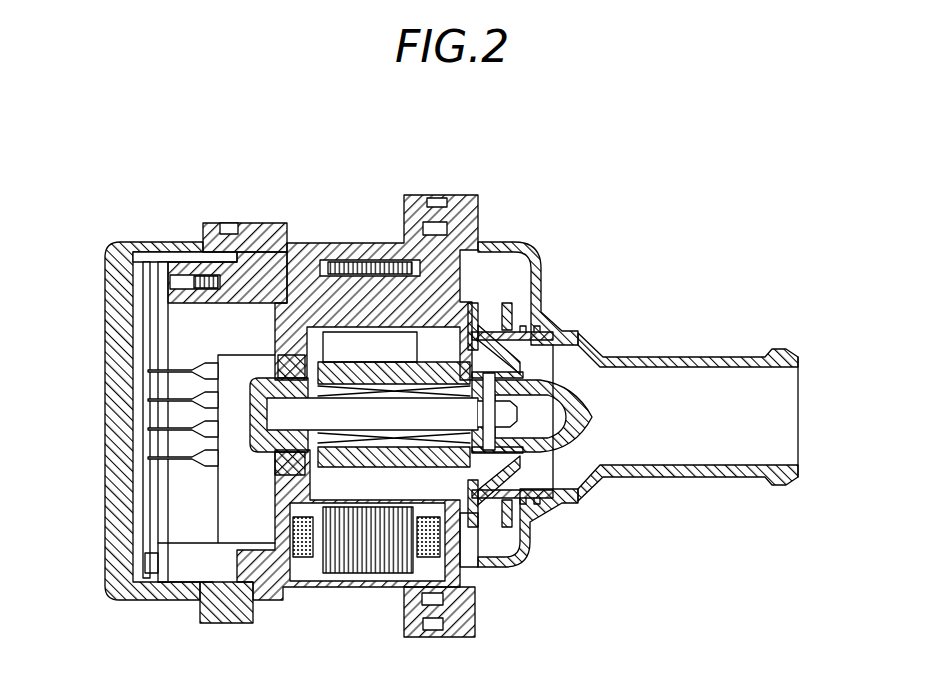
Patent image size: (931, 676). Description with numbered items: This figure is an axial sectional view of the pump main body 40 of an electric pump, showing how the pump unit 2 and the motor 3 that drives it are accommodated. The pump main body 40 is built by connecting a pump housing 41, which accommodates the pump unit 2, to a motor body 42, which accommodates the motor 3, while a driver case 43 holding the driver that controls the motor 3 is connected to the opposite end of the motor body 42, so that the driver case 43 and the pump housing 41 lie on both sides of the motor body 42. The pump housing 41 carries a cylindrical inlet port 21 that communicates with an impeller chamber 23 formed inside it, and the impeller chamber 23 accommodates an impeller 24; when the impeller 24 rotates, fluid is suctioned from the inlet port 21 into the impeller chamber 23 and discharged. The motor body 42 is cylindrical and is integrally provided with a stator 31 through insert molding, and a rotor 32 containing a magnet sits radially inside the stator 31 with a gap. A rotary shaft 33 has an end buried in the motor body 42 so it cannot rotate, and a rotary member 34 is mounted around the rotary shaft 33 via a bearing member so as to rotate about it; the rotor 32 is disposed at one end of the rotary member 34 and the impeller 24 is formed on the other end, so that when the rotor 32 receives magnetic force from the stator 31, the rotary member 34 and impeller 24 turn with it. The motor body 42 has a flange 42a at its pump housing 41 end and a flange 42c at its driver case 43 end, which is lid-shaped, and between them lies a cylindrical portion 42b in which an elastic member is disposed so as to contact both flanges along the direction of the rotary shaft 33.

The pump unit 2 is at (629, 426).
The motor 3 is at (355, 393).
The inlet port 21 is at (705, 357).
The impeller chamber 23 is at (495, 542).
The impeller 24 is at (500, 345).
The stator 31 is at (367, 573).
The rotor 32 is at (345, 345).
The rotary shaft 33 is at (462, 413).
The rotary member 34 is at (505, 515).
The pump main body 40 is at (437, 393).
The pump housing 41 is at (500, 243).
The motor body 42 is at (323, 378).
The flange 42a is at (402, 207).
The cylindrical portion 42b is at (362, 240).
The flange 42c is at (272, 225).
The driver case 43 is at (148, 240).